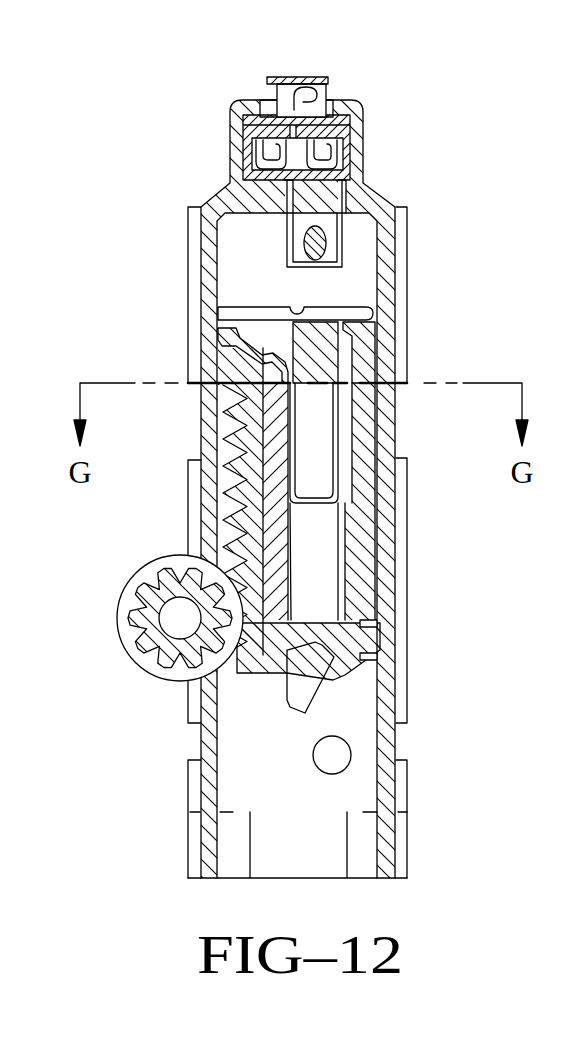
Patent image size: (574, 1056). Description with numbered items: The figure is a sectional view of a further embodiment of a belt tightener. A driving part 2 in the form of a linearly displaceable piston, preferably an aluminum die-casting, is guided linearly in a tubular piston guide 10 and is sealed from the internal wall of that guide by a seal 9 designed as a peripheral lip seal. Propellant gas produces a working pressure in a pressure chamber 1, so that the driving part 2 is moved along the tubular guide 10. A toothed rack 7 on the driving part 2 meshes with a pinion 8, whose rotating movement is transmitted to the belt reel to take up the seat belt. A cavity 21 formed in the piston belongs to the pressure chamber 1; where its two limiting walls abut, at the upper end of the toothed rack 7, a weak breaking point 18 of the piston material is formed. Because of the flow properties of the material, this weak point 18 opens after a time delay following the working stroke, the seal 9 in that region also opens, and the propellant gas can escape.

The pressure chamber 1 is at (249, 274).
The driving part 2 is at (358, 459).
The toothed rack 7 is at (232, 487).
The pinion 8 is at (168, 652).
The seal 9 is at (347, 314).
The tubular piston guide 10 is at (384, 571).
The weak breaking point 18 is at (293, 382).
The cavity 21 is at (271, 340).